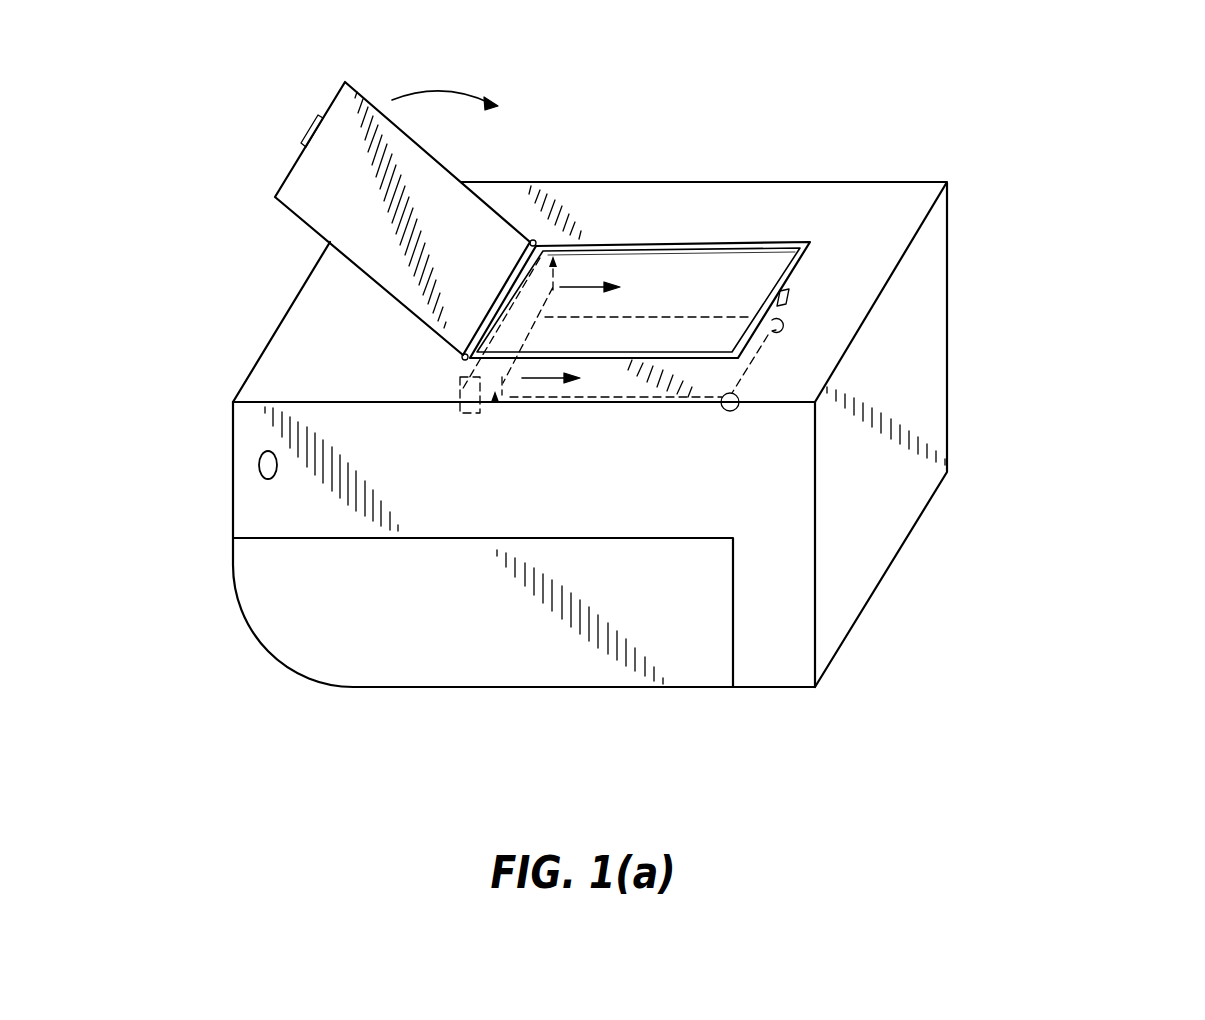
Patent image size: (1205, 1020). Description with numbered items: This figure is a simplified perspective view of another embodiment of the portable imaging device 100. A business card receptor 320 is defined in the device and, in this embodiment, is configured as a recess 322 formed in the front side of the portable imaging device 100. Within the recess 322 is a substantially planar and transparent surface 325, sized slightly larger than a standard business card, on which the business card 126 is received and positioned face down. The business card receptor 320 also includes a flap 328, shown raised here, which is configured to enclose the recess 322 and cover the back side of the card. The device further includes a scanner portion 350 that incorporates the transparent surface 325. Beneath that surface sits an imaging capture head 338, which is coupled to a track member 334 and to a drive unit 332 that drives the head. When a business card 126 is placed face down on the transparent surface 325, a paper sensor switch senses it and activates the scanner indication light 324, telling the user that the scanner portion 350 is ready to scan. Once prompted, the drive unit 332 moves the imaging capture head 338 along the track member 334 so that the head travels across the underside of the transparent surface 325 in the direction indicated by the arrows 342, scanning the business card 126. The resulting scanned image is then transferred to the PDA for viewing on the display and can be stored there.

The portable imaging device 100 is at (1002, 297).
The business card 126 is at (708, 265).
The business card receptor 320 is at (824, 235).
The recess 322 is at (775, 240).
The scanner indication light 324 is at (258, 463).
The transparent surface 325 is at (625, 360).
The flap 328 is at (361, 96).
The drive unit 332 is at (730, 412).
The track member 334 is at (588, 407).
The imaging capture head 338 is at (468, 413).
The arrows 342 is at (585, 286).
The scanner portion 350 is at (673, 188).